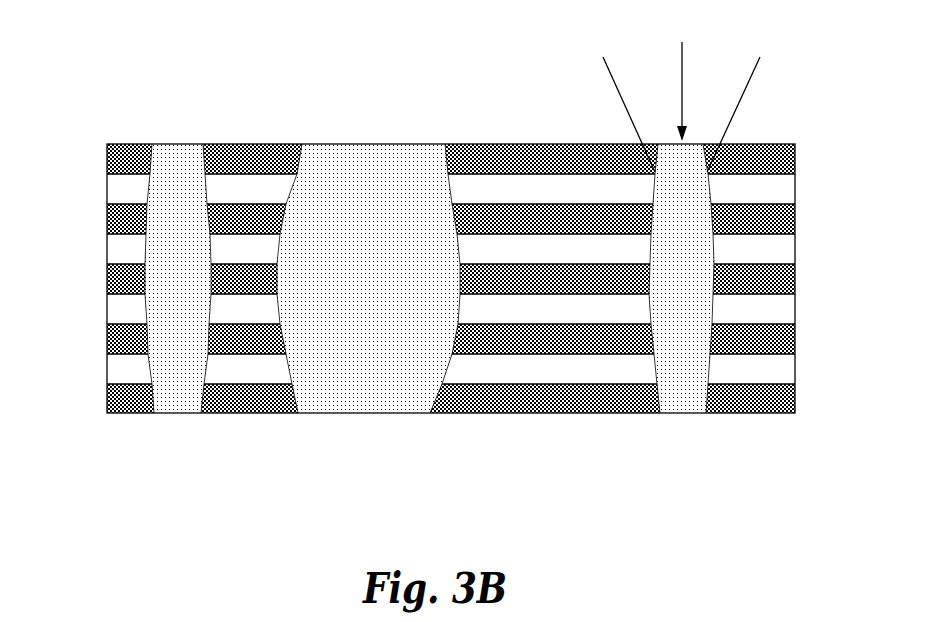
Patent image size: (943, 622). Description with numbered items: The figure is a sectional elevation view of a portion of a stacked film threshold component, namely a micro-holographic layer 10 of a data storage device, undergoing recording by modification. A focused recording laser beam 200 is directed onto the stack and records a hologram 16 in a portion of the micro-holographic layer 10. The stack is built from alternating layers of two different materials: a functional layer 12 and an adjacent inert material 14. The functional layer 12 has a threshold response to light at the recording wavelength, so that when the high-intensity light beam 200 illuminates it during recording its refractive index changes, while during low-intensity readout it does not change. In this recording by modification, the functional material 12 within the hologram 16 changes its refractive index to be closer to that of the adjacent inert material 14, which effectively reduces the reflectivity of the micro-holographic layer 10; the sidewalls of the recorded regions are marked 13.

The micro-holographic layer 10 is at (801, 128).
The functional layer 12 is at (112, 158).
The via sidewall 13 is at (452, 273).
The inert material layer 14 is at (112, 190).
The hologram 16 is at (429, 278).
The focused recording laser beam 200 is at (683, 77).